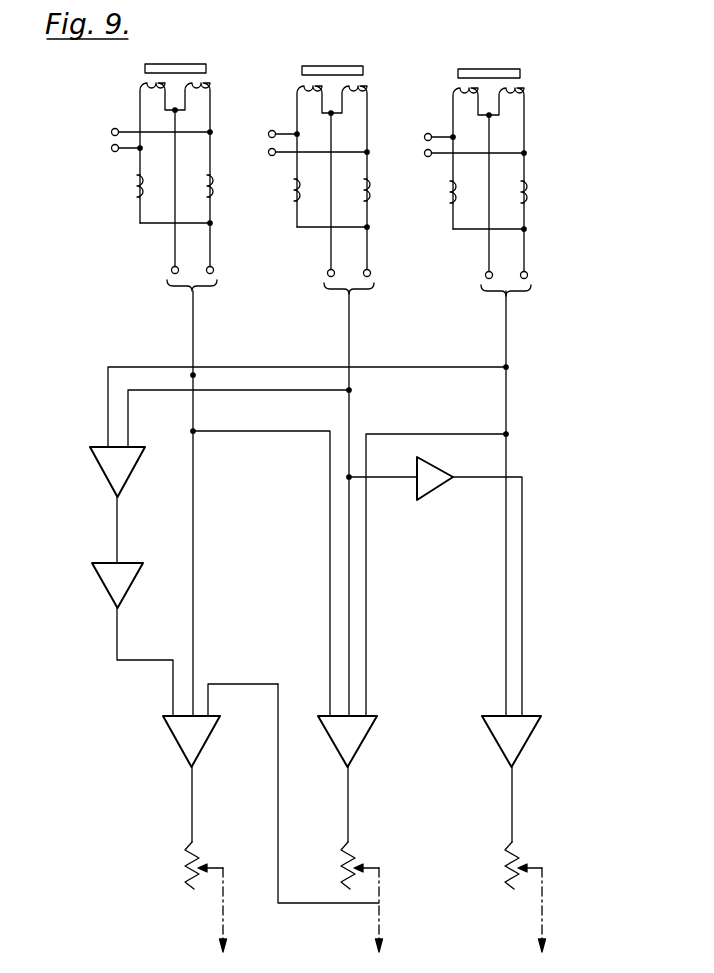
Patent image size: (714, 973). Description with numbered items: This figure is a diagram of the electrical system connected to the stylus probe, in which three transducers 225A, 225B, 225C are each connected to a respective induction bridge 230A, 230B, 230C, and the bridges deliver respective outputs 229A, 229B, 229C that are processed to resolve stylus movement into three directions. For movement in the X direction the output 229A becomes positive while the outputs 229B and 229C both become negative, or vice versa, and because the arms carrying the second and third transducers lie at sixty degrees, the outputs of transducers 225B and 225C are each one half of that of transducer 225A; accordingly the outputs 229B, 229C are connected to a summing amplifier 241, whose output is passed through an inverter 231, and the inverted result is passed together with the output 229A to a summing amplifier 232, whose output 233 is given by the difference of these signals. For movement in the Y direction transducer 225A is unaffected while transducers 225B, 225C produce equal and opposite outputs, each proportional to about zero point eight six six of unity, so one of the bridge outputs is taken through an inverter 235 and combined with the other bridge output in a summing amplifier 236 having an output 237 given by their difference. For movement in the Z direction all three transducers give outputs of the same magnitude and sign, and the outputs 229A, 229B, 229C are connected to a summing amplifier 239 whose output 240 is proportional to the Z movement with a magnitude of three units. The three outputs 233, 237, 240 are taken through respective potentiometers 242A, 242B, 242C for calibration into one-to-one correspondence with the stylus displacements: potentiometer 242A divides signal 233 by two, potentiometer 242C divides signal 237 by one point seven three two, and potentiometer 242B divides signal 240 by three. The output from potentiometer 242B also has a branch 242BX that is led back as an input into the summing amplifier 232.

The transducer 225A is at (173, 61).
The transducer 225B is at (340, 62).
The transducer 225C is at (495, 66).
The induction bridge 230A is at (210, 119).
The induction bridge 230B is at (367, 121).
The induction bridge 230C is at (524, 123).
The output 229A is at (193, 339).
The output 229B is at (349, 341).
The output 229C is at (506, 342).
The summing amplifier 241 is at (106, 482).
The inverter 231 is at (108, 600).
The inverter 235 is at (434, 492).
The summing amplifier 232 is at (181, 742).
The summing amplifier 239 is at (365, 742).
The summing amplifier 236 is at (530, 742).
The output 233 is at (192, 805).
The output 240 is at (348, 810).
The output 237 is at (512, 812).
The potentiometer 242A is at (245, 860).
The potentiometer 242B is at (381, 872).
The potentiometer 242C is at (544, 876).
The branch 242BX is at (304, 904).